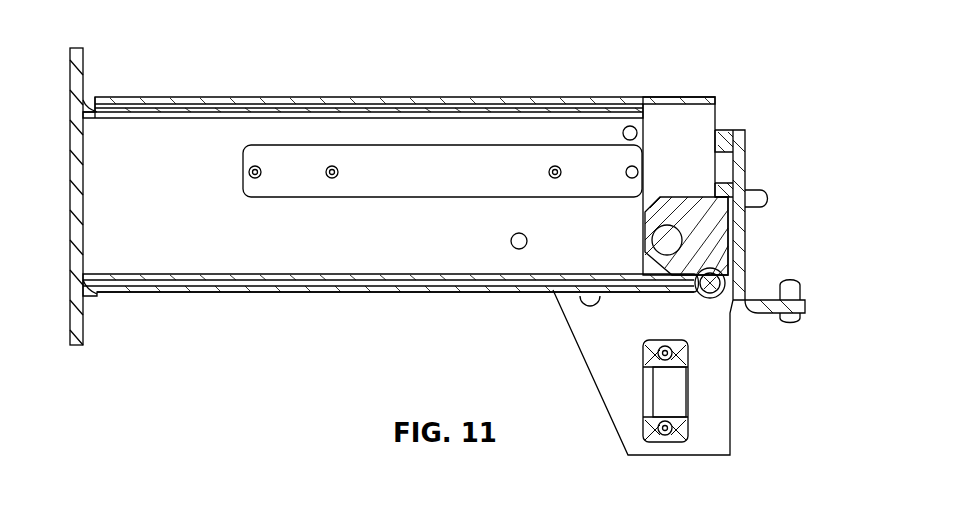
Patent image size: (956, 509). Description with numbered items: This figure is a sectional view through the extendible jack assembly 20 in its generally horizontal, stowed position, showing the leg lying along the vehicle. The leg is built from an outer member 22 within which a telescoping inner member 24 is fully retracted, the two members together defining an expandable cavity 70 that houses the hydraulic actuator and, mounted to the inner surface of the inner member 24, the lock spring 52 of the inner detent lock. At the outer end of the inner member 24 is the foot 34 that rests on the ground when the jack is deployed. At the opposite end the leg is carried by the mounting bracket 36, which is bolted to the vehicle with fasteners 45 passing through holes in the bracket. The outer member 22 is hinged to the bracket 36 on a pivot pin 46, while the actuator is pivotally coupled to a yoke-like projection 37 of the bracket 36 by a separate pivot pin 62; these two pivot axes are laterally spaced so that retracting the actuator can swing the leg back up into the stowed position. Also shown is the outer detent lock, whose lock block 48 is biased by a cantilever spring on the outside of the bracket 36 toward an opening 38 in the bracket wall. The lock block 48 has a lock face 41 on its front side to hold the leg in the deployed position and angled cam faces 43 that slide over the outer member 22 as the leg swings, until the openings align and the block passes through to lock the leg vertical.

The jack assembly 20 is at (449, 67).
The foot 34 is at (83, 62).
The expandable cavity 70 is at (222, 136).
The outer member 22 is at (203, 297).
The inner member 24 is at (88, 290).
The lock spring 52 is at (358, 184).
The pivot pin 62 is at (678, 196).
The yoke-like projection 37 is at (722, 240).
The mounting bracket 36 is at (745, 145).
The fasteners 45 is at (768, 199).
The pivot pin 46 is at (712, 298).
The lock face 41 is at (689, 400).
The cam face 43 is at (645, 364).
The opening 38 is at (665, 442).
The lock block 48 is at (697, 428).